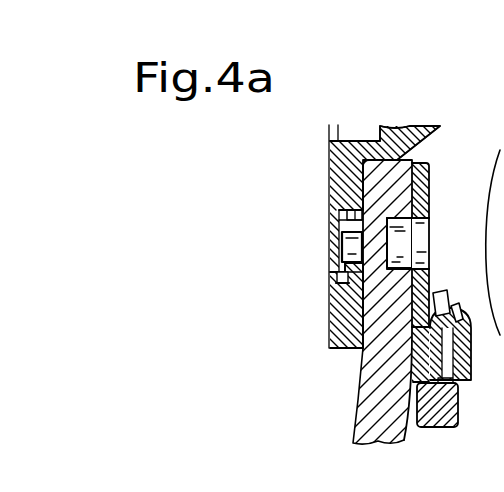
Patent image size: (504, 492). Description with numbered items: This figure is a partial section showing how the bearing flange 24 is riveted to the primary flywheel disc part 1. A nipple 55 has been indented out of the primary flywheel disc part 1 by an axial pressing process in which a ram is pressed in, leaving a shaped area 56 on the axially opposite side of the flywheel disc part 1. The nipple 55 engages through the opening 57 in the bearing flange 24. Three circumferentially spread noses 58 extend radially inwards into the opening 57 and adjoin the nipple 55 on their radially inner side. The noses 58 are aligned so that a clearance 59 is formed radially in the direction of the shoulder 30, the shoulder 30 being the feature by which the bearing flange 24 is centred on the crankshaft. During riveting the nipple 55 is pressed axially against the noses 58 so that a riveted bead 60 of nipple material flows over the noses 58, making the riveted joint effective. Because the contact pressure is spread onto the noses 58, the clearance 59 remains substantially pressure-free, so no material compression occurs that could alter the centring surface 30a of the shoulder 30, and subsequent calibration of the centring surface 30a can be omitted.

The primary flywheel disc part 1 is at (382, 367).
The bearing flange 24 is at (352, 182).
The shoulder 30 is at (378, 128).
The centring surface 30a is at (369, 138).
The clearance 59 is at (347, 140).
The shaped area 56 is at (430, 186).
The opening 57 is at (340, 213).
The nipple 55 is at (345, 262).
The riveted bead 60 is at (348, 267).
The noses 58 is at (346, 282).